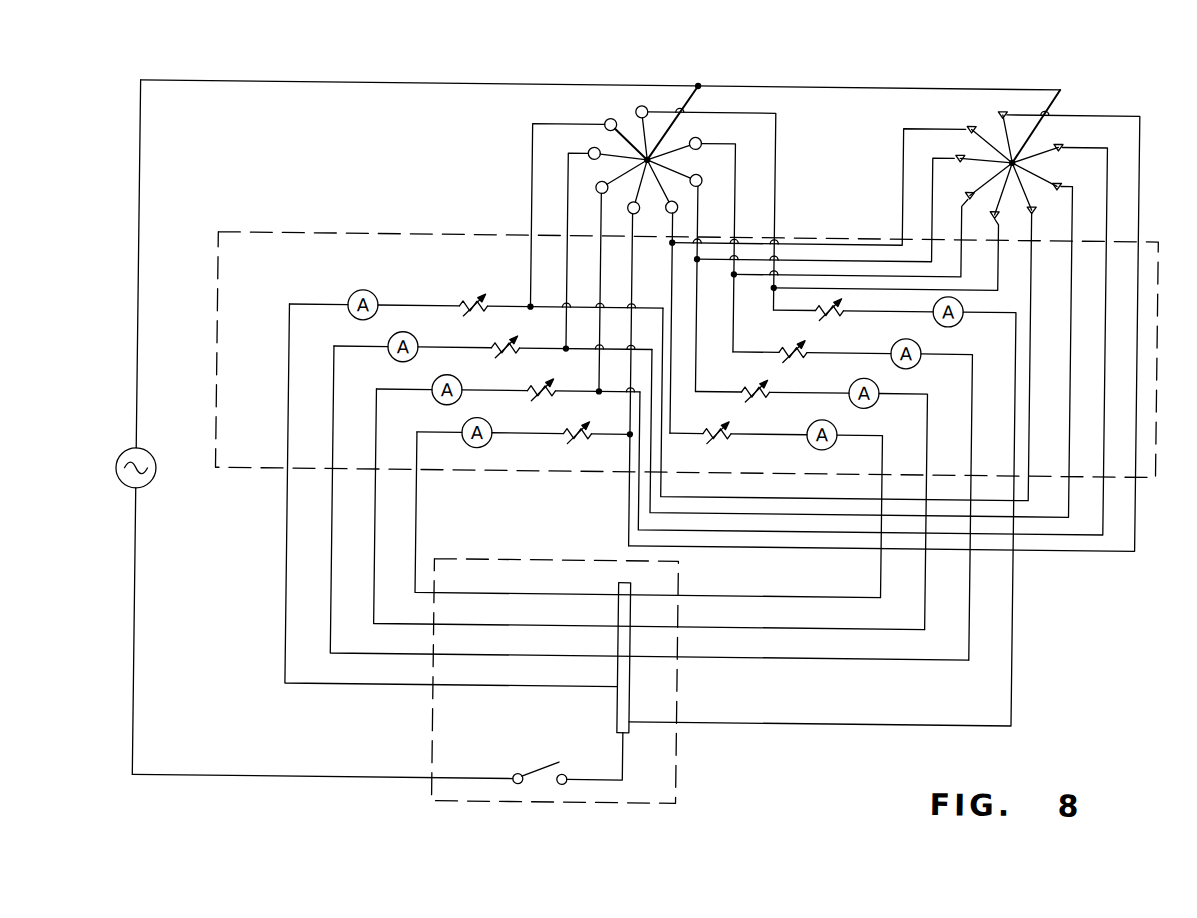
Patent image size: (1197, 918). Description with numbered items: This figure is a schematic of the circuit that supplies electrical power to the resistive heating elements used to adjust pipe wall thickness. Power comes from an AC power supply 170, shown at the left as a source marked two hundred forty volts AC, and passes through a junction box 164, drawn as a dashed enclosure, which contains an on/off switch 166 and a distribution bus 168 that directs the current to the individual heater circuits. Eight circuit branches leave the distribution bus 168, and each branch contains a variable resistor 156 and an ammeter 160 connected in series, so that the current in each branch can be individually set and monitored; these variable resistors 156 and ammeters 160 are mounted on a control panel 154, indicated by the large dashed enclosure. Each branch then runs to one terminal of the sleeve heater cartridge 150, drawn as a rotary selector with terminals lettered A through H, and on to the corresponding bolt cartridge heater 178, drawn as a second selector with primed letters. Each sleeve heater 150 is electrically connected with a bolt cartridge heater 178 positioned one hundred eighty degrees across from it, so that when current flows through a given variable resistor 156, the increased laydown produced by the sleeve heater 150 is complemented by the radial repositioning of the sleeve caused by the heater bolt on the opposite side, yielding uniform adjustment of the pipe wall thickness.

The sleeve heater cartridge 150 is at (669, 214).
The bolt cartridge heater 178 is at (1009, 159).
The ammeter 160 is at (376, 313).
The variable resistor 156 is at (568, 442).
The AC power supply 170 is at (150, 459).
The control panel 154 is at (1155, 472).
The junction box 164 is at (684, 757).
The on/off switch 166 is at (520, 775).
The distribution bus 168 is at (620, 706).